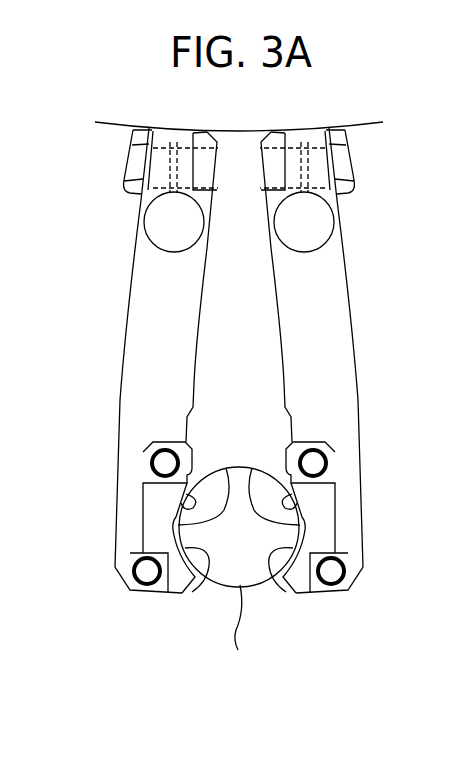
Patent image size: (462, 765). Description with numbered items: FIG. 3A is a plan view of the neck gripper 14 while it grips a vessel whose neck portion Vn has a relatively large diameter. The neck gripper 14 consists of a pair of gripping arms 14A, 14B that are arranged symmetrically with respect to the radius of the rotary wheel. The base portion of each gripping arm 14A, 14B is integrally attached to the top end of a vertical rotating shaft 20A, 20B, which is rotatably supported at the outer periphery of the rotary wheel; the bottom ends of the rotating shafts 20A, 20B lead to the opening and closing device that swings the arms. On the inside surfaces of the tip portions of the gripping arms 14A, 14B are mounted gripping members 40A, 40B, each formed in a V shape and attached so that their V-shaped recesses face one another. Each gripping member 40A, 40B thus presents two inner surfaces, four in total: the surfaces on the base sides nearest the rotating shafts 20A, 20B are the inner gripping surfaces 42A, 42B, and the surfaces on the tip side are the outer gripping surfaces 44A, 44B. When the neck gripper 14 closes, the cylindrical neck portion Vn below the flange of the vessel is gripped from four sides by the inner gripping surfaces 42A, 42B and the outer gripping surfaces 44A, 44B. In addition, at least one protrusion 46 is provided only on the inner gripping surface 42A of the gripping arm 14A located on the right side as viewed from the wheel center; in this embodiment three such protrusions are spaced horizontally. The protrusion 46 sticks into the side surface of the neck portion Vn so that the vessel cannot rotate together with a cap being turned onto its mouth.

The neck gripper 14 is at (115, 624).
The gripping arm 14A is at (130, 377).
The gripping arm 14B is at (350, 377).
The rotating shaft 20A is at (158, 221).
The rotating shaft 20B is at (320, 221).
The gripping member 40A is at (152, 527).
The gripping member 40B is at (326, 527).
The inner gripping surface 42A is at (226, 468).
The inner gripping surface 42B is at (290, 492).
The outer gripping surface 44A is at (205, 565).
The outer gripping surface 44B is at (275, 565).
The protrusion 46 is at (188, 492).
The neck portion Vn is at (239, 632).